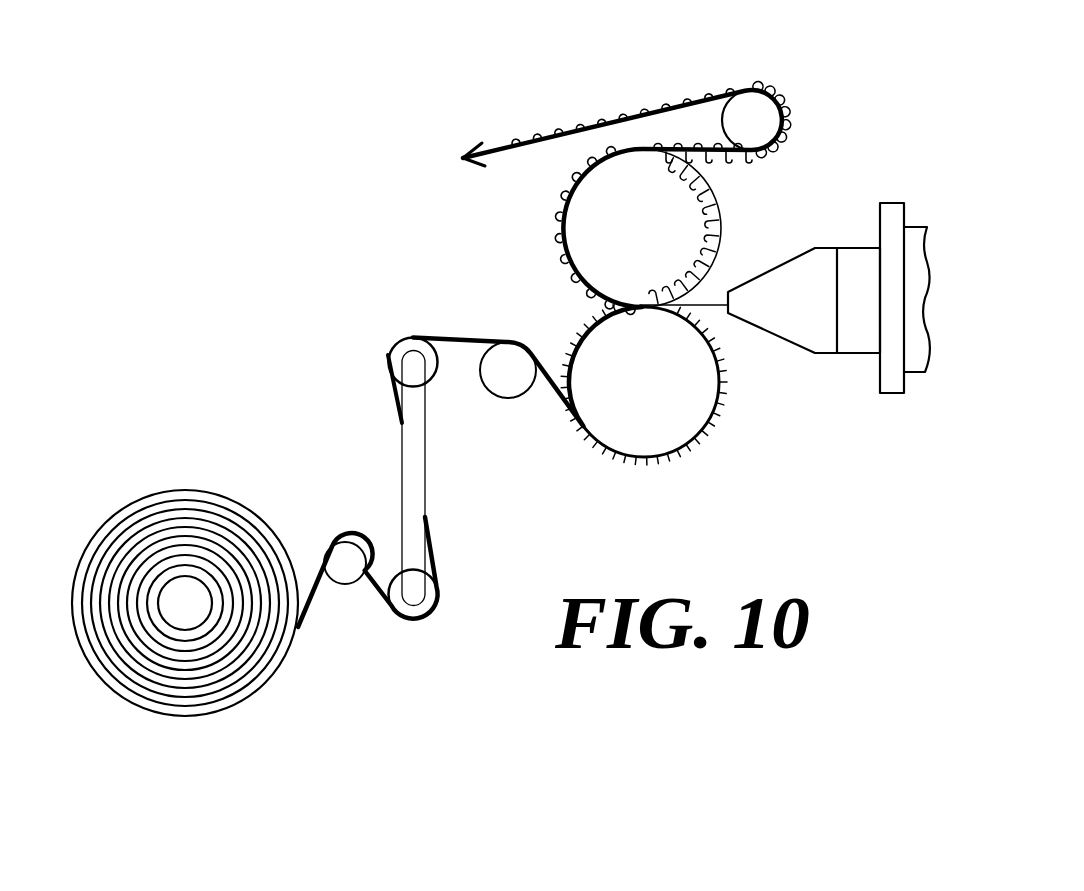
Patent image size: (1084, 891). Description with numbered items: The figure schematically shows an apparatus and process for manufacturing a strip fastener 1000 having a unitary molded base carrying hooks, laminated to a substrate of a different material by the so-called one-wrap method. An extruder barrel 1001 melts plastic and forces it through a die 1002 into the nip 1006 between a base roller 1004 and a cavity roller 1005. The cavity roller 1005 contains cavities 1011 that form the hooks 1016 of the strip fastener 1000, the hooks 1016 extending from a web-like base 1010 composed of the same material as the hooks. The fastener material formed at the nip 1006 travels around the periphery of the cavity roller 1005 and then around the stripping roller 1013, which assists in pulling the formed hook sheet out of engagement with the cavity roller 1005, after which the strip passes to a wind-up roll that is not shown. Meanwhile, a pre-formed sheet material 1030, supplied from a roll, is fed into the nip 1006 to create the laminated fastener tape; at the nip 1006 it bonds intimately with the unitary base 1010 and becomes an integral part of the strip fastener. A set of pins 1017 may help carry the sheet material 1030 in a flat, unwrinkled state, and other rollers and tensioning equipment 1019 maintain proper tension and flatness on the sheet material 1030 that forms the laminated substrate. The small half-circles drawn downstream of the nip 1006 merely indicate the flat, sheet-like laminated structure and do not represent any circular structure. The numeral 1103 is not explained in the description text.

The strip fastener 1000 is at (612, 116).
The web-like base 1010 is at (663, 103).
The hooks 1016 is at (745, 76).
The stripping roller 1013 is at (785, 120).
The cavity roller 1005 is at (660, 263).
The cavities 1011 is at (677, 162).
The pre-formed sheet material 1030 is at (568, 186).
The nip 1006 is at (610, 306).
The extruded filament 1103 is at (712, 300).
The die 1002 is at (803, 262).
The extruder barrel 1001 is at (915, 228).
The base roller 1004 is at (660, 421).
The set of pins 1017 is at (720, 358).
The rollers and tensioning equipment 1019 is at (412, 428).